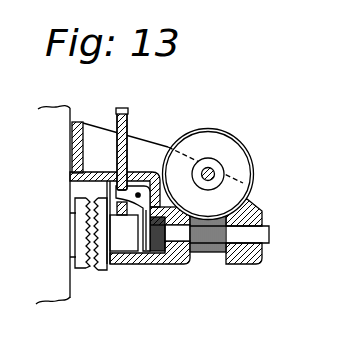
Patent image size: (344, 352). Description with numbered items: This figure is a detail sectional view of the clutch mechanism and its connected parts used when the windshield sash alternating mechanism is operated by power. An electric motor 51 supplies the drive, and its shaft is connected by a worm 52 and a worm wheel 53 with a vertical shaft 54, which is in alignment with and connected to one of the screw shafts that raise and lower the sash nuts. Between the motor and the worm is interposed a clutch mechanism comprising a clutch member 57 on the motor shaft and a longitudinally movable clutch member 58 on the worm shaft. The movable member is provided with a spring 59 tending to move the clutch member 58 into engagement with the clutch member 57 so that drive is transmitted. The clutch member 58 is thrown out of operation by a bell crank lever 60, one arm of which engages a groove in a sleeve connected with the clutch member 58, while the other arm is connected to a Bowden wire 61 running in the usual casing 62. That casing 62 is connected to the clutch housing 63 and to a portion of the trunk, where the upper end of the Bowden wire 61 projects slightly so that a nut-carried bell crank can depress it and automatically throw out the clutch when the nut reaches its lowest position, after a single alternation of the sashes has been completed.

The electric motor 51 is at (53, 205).
The worm 52 is at (212, 252).
The worm wheel 53 is at (252, 173).
The vertical shaft 54 is at (208, 174).
The clutch member 57 is at (82, 269).
The longitudinally movable clutch member 58 is at (102, 271).
The spring 59 is at (161, 251).
The bell crank lever 60 is at (163, 152).
The Bowden wire 61 is at (124, 110).
The casing 62 is at (127, 188).
The clutch housing 63 is at (93, 172).